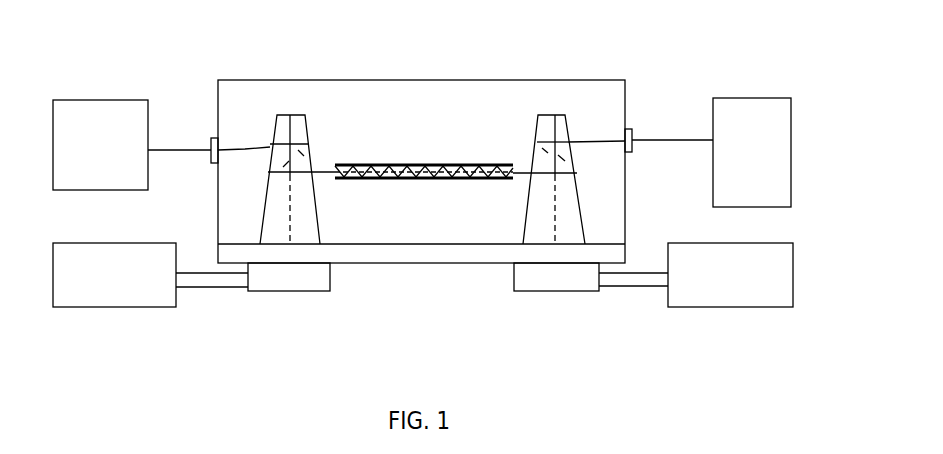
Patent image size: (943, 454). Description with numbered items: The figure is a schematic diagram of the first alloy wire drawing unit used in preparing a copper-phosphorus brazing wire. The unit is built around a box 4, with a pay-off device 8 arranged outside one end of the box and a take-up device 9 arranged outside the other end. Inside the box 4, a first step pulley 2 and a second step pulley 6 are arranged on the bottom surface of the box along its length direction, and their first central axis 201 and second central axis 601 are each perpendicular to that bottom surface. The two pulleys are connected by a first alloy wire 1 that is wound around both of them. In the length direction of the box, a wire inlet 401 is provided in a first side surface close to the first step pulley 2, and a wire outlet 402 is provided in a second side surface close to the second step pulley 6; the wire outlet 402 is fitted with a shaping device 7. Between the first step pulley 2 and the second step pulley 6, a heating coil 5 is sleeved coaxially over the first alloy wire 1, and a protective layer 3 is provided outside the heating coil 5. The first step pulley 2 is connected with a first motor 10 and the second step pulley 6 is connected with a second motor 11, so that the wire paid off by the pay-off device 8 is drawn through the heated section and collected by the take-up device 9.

The first alloy wire 1 is at (178, 148).
The first step pulley 2 is at (305, 117).
The protective layer 3 is at (351, 164).
The box 4 is at (450, 80).
The heating coil 5 is at (485, 164).
The second step pulley 6 is at (563, 117).
The shaping device 7 is at (628, 130).
The pay-off device 8 is at (105, 100).
The take-up device 9 is at (765, 98).
The first motor 10 is at (178, 308).
The second motor 11 is at (692, 307).
The first central axis 201 is at (295, 228).
The wire inlet 401 is at (218, 141).
The wire outlet 402 is at (631, 140).
The second central axis 601 is at (553, 228).